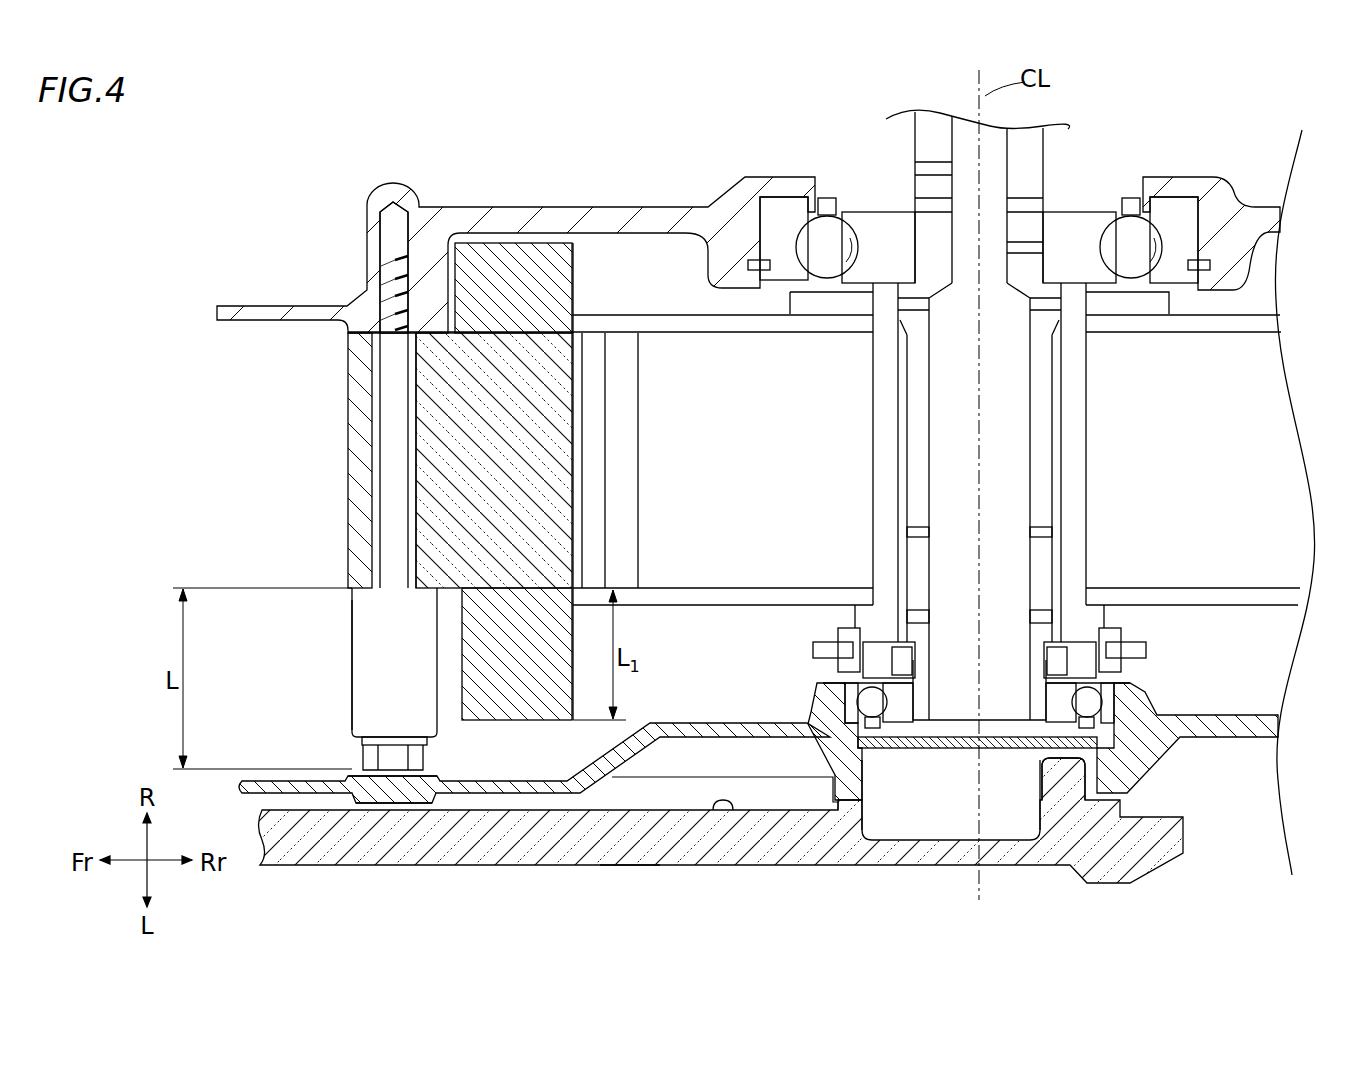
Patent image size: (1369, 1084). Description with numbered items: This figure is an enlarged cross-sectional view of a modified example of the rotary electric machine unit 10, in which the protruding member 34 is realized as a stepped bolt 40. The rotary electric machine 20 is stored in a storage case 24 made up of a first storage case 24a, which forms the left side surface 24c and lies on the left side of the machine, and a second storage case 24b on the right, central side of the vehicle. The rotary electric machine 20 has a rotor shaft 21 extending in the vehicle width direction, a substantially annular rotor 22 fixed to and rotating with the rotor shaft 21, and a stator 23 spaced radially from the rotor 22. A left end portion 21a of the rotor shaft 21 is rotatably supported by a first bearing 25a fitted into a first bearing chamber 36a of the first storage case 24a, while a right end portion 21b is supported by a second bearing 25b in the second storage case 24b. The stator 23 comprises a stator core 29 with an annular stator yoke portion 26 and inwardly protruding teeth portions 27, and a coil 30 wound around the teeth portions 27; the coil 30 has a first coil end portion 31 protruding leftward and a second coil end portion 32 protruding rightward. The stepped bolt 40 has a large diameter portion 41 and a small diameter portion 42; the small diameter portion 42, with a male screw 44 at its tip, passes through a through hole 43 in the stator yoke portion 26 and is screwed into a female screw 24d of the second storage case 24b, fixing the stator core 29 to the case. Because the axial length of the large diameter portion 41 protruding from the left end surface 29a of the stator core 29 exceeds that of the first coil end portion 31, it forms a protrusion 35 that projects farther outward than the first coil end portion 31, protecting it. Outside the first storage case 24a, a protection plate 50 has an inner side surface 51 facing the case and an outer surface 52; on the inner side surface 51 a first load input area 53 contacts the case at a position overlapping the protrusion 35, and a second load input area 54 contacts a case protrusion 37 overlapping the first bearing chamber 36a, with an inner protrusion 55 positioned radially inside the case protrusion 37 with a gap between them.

The rotary electric machine unit 10 is at (1248, 140).
The rotary electric machine 20 is at (1182, 178).
The rotor shaft 21 is at (934, 507).
The left end portion 21a is at (1035, 735).
The right end portion 21b is at (928, 130).
The rotor 22 is at (1262, 407).
The stator 23 is at (348, 360).
The storage case 24 is at (652, 527).
The first storage case 24a is at (285, 797).
The second storage case 24b is at (240, 303).
The left side surface 24c is at (935, 748).
The female screw 24d is at (410, 277).
The first bearing 25a is at (1105, 696).
The second bearing 25b is at (1075, 225).
The stator yoke portion 26 is at (437, 404).
The teeth portions 27 is at (525, 440).
The stator core 29 is at (403, 460).
The left end surface 29a is at (460, 620).
The coil 30 is at (520, 243).
The first coil end portion 31 is at (500, 642).
The second coil end portion 32 is at (548, 278).
The protruding member 34 is at (339, 679).
The protrusion 35 is at (422, 752).
The first bearing chamber 36a is at (1102, 728).
The case protrusion 37 is at (1120, 777).
The stepped bolt 40 is at (352, 668).
The large diameter portion 41 is at (375, 705).
The small diameter portion 42 is at (393, 513).
The through hole 43 is at (413, 480).
The male screw 44 is at (375, 260).
The protection plate 50 is at (487, 866).
The inner side surface 51 is at (733, 812).
The outer surface 52 is at (630, 866).
The first load input area 53 is at (387, 800).
The second load input area 54 is at (866, 803).
The inner protrusion 55 is at (1062, 800).